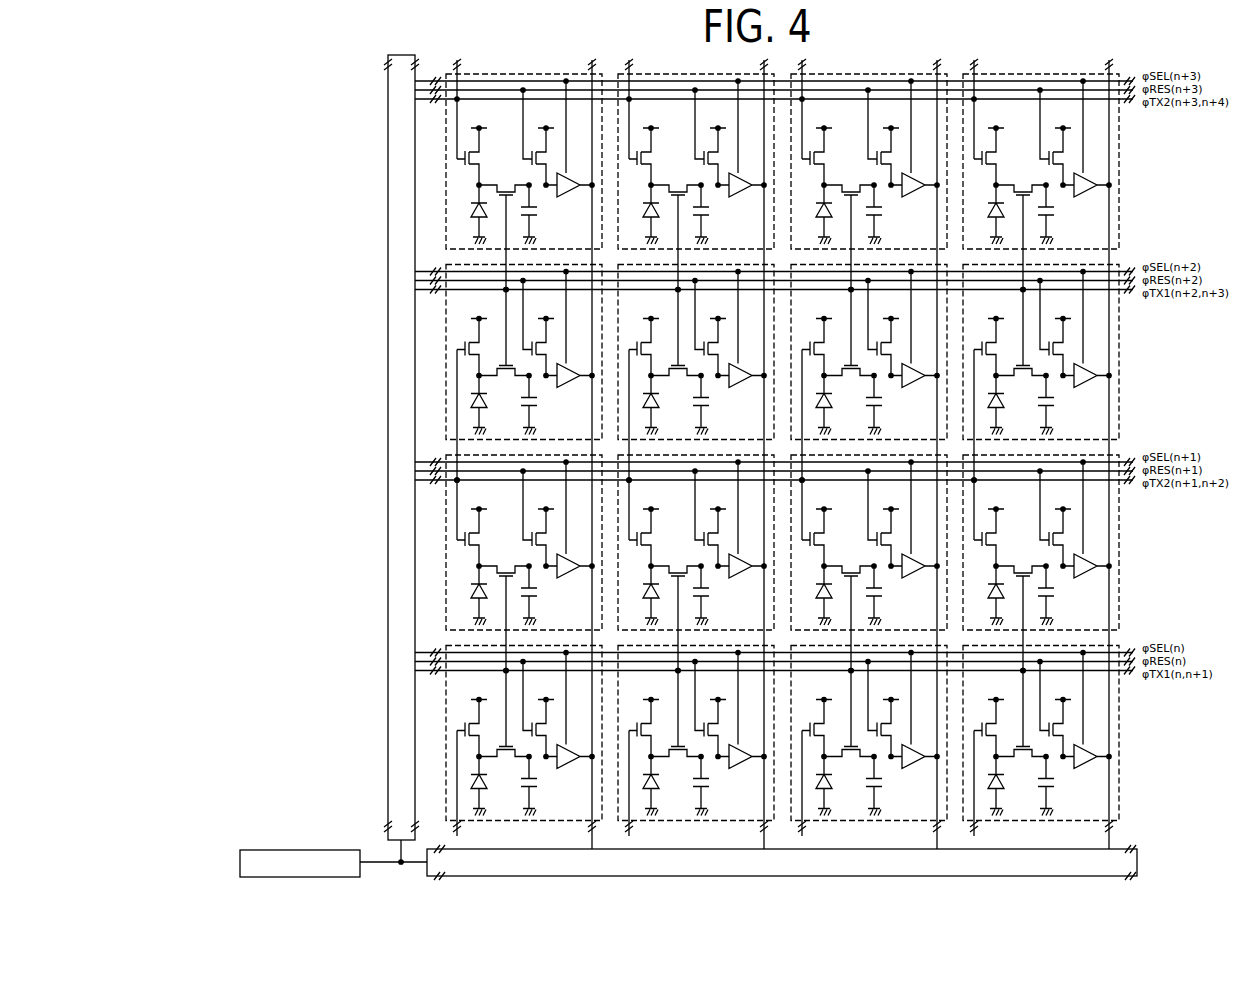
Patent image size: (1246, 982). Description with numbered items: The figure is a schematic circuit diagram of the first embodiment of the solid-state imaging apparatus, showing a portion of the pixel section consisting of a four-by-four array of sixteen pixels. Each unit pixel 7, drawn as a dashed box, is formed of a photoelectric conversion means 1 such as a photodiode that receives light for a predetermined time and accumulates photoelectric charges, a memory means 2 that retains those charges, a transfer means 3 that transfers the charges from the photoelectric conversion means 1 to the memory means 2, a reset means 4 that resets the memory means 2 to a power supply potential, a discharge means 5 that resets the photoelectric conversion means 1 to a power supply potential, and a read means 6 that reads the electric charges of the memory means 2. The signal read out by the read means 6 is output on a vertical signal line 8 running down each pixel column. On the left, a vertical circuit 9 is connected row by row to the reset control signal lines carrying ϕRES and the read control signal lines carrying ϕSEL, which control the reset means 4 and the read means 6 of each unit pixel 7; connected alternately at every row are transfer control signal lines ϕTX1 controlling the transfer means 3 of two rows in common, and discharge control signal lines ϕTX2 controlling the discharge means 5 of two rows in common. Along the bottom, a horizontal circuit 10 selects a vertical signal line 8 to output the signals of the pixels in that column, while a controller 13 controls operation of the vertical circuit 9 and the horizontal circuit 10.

The photoelectric conversion means 1 is at (985, 213).
The memory means 2 is at (1059, 213).
The transfer means 3 is at (1021, 172).
The reset means 4 is at (1059, 137).
The discharge means 5 is at (986, 161).
The read means 6 is at (1091, 138).
The unit pixel 7 is at (1059, 161).
The vertical signal line 8 is at (1097, 454).
The vertical circuit 9 is at (388, 575).
The horizontal circuit 10 is at (1137, 862).
The controller 13 is at (302, 850).